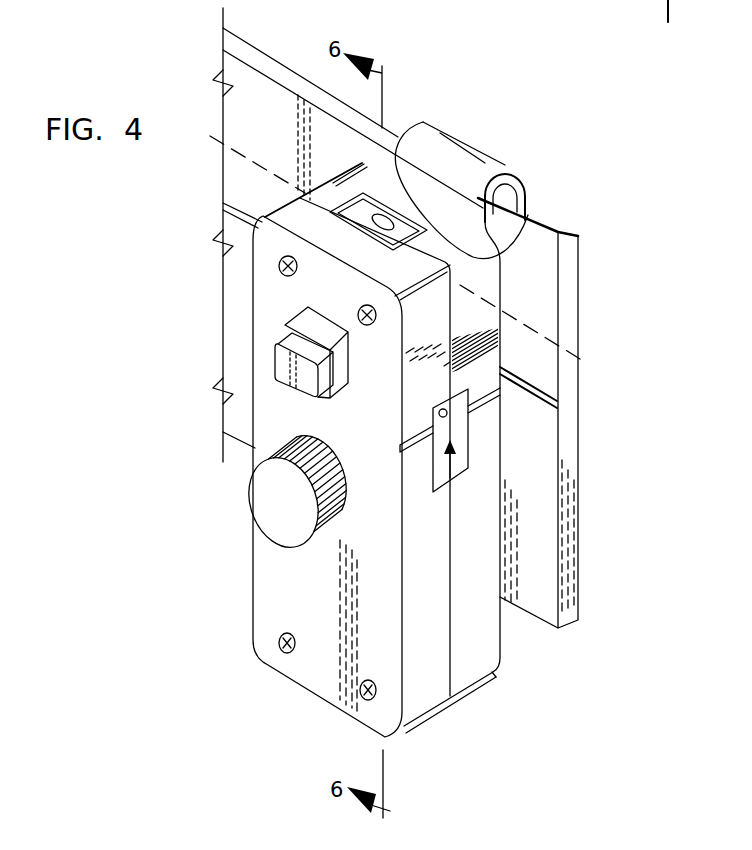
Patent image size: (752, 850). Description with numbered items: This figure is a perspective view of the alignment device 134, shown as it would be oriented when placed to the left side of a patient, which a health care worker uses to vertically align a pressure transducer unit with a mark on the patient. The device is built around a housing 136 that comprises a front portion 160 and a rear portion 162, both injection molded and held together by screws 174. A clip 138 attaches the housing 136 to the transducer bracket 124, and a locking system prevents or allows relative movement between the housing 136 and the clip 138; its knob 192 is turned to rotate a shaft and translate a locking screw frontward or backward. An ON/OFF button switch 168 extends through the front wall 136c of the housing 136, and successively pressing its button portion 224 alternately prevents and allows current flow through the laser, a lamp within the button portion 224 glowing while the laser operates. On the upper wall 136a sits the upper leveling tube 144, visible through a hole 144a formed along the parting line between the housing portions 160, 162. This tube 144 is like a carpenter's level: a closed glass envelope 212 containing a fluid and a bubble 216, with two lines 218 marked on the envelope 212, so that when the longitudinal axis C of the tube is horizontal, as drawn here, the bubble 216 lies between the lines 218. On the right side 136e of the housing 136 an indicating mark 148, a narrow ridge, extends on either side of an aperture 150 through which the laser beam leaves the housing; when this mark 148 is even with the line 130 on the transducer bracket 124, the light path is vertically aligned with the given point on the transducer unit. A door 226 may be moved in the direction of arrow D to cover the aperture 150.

The transducer bracket 124 is at (553, 287).
The line 130 is at (547, 393).
The alignment device 134 is at (232, 540).
The housing 136 is at (275, 581).
The upper wall 136a is at (223, 223).
The front wall 136c is at (275, 603).
The right side 136e is at (480, 617).
The clip 138 is at (445, 130).
The upper leveling tube 144 is at (348, 200).
The hole 144a is at (372, 200).
The indicating mark 148 is at (470, 410).
The aperture 150 is at (468, 418).
The front portion 160 is at (420, 693).
The rear portion 162 is at (472, 655).
The ON/OFF button switch 168 is at (285, 336).
The screws 174 is at (278, 266).
The knob 192 is at (272, 503).
The glass envelope 212 is at (518, 210).
The bubble 216 is at (485, 175).
The lines 218 is at (520, 255).
The button portion 224 is at (280, 370).
The door 226 is at (460, 474).
The longitudinal axis C is at (553, 324).
The arrow D is at (467, 465).